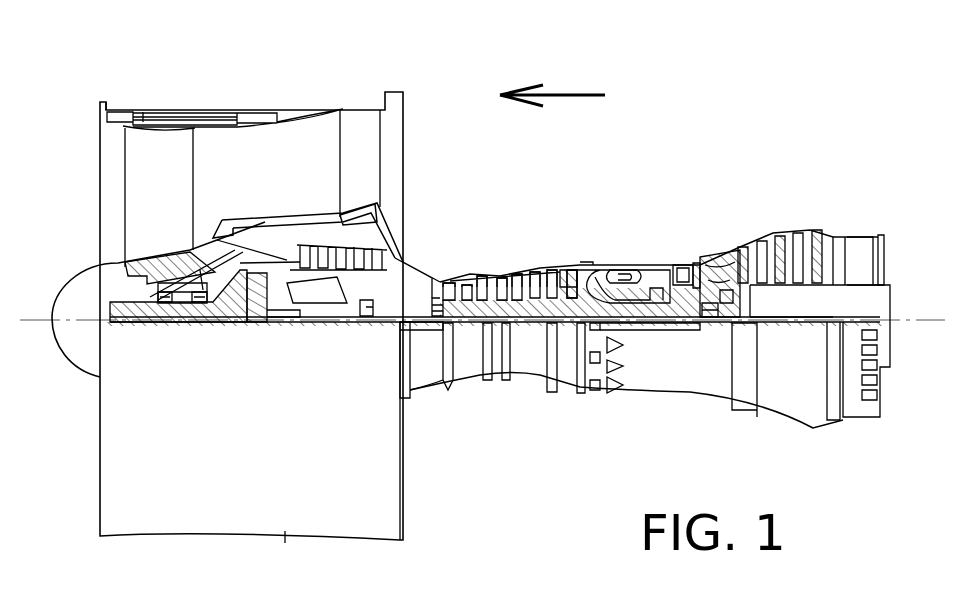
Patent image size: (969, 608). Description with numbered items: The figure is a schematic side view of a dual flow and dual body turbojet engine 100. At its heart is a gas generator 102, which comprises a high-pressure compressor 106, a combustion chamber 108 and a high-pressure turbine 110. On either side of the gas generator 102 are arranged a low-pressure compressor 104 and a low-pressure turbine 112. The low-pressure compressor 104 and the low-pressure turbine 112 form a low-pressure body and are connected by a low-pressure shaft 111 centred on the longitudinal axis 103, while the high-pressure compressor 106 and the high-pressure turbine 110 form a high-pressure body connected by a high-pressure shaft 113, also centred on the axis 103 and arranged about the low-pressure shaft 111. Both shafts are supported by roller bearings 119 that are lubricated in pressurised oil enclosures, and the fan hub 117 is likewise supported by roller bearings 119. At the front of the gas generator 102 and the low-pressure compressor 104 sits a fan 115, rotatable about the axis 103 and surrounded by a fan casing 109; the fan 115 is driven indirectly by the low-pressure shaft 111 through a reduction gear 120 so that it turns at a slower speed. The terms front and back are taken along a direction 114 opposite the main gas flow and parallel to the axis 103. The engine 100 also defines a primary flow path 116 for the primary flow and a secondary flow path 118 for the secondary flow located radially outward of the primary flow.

The turbojet engine 100 is at (573, 212).
The gas generator 102 is at (513, 388).
The longitudinal axis 103 is at (33, 322).
The low-pressure compressor 104 is at (360, 257).
The high-pressure compressor 106 is at (537, 308).
The combustion chamber 108 is at (643, 282).
The fan casing 109 is at (212, 110).
The high-pressure turbine 110 is at (682, 277).
The low-pressure shaft 111 is at (420, 322).
The low-pressure turbine 112 is at (787, 247).
The high-pressure shaft 113 is at (640, 312).
The direction 114 is at (580, 92).
The fan 115 is at (165, 148).
The primary flow path 116 is at (432, 280).
The fan hub 117 is at (162, 303).
The secondary flow path 118 is at (282, 167).
The roller bearings 119 is at (203, 303).
The reduction gear 120 is at (253, 307).